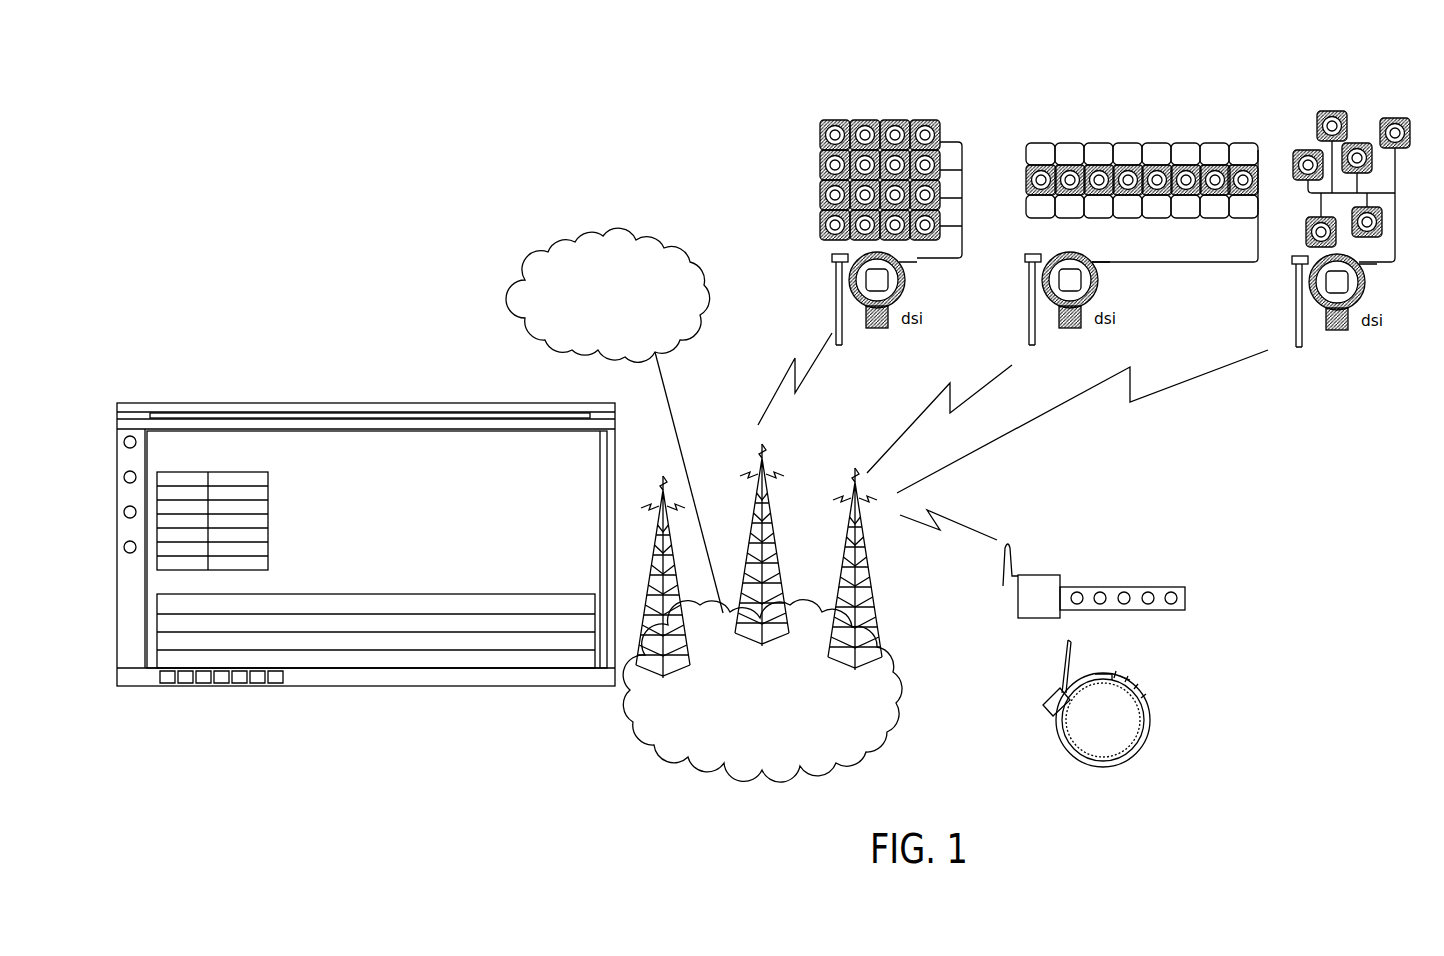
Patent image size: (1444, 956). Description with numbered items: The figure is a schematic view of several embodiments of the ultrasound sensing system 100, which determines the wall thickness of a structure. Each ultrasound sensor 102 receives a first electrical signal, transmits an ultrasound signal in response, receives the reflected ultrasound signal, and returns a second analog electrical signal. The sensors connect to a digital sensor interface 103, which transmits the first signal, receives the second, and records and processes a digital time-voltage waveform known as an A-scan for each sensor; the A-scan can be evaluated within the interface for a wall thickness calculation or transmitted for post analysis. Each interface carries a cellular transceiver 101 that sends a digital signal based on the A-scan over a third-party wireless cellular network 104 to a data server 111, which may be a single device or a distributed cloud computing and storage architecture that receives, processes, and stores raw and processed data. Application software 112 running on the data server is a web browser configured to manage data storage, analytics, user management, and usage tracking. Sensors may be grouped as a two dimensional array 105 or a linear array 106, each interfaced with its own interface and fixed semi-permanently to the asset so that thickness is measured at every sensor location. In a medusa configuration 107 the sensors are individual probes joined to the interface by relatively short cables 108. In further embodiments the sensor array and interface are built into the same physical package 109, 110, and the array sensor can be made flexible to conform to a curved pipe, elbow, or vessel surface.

The ultrasound sensing system 100 is at (480, 103).
The cellular transceiver 101 is at (1040, 254).
The ultrasound sensor 102 is at (818, 190).
The digital sensor interface 103 is at (1098, 289).
The wireless cellular network 104 is at (897, 716).
The two dimensional array 105 is at (834, 131).
The linear array 106 is at (1117, 150).
The medusa configuration 107 is at (1330, 110).
The cables 108 is at (1397, 160).
The physical package 109 is at (1123, 608).
The physical package 110 is at (1150, 720).
The data server 111 is at (523, 296).
The application software 112 is at (383, 403).